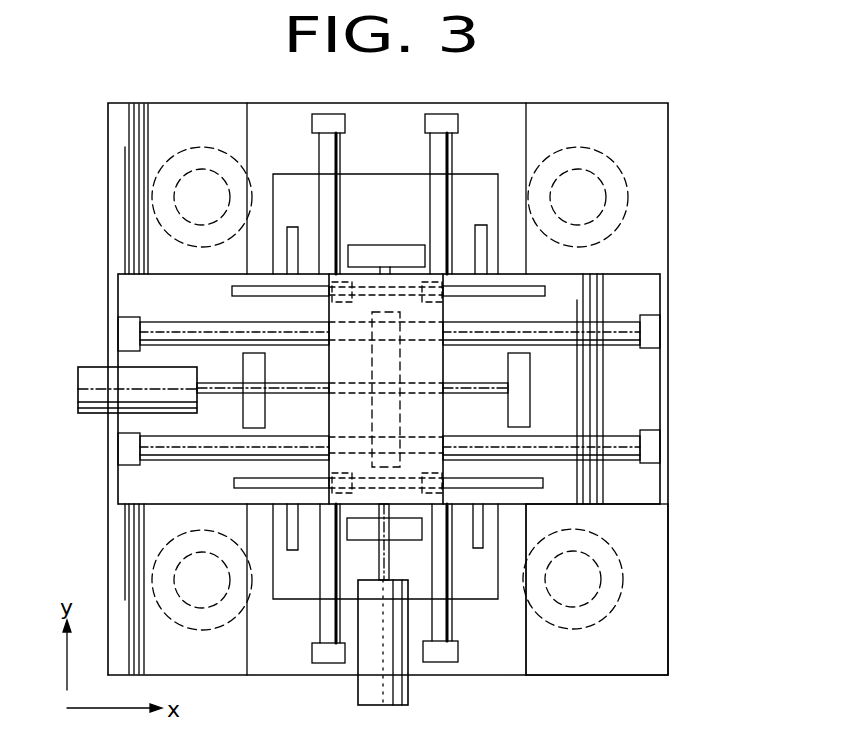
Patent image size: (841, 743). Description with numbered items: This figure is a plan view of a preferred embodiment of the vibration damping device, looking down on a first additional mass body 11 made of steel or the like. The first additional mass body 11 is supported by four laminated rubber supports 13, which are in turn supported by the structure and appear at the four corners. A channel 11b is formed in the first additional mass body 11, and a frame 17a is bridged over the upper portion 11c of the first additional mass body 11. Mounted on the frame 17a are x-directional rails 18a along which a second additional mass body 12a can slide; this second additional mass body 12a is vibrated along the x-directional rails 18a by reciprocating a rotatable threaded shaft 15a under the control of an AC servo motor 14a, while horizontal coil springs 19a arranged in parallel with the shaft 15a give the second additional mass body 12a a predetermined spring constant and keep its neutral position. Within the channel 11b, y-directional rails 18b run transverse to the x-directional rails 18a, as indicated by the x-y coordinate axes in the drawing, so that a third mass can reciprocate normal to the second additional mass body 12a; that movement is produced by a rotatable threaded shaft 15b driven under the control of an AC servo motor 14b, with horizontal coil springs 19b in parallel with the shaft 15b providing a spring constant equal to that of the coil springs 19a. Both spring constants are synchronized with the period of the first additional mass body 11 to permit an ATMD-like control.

The first additional mass body 11 is at (686, 581).
The channel 11b is at (523, 663).
The upper portion of the first additional mass body 11c is at (633, 543).
The second additional mass body 12a is at (402, 303).
The laminated rubber supports 13 is at (173, 200).
The AC servo motor 14a is at (92, 380).
The AC servo motor 14b is at (360, 688).
The rotatable threaded shaft 15a is at (220, 393).
The rotatable threaded shaft 15b is at (378, 560).
The frame 17a is at (643, 384).
The x-directional rails 18a is at (542, 285).
The y-directional rails 18b is at (297, 525).
The horizontal coil springs 19a is at (615, 323).
The horizontal coil springs 19b is at (318, 158).